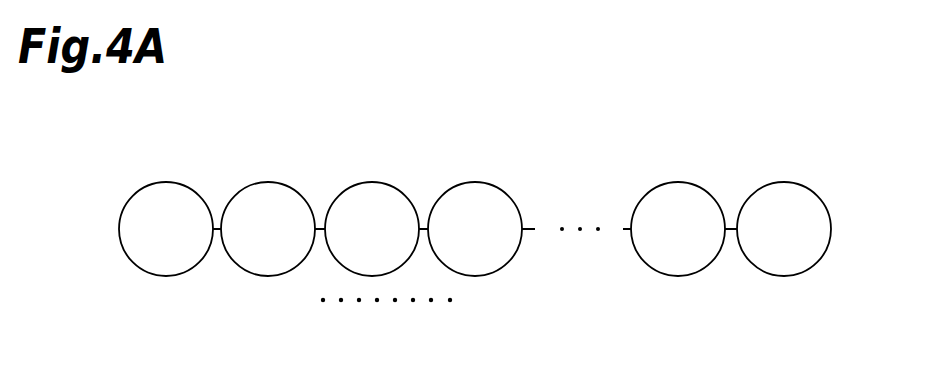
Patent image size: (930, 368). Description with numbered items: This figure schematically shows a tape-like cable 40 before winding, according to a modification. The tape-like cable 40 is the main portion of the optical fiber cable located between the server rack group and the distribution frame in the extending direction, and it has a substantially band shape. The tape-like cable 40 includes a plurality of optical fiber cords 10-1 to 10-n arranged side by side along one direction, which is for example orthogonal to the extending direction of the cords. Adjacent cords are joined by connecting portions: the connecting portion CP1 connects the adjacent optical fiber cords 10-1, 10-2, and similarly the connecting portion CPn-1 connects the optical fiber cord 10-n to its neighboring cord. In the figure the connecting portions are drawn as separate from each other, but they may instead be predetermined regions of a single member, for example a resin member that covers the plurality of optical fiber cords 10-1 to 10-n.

The tape-like cable 40 is at (830, 101).
The optical fiber cord 10-1 is at (804, 200).
The optical fiber cord 10-2 is at (660, 262).
The optical fiber cord 10-n is at (148, 258).
The connecting portion CP1 is at (735, 226).
The connecting portion CPn-1 is at (216, 225).